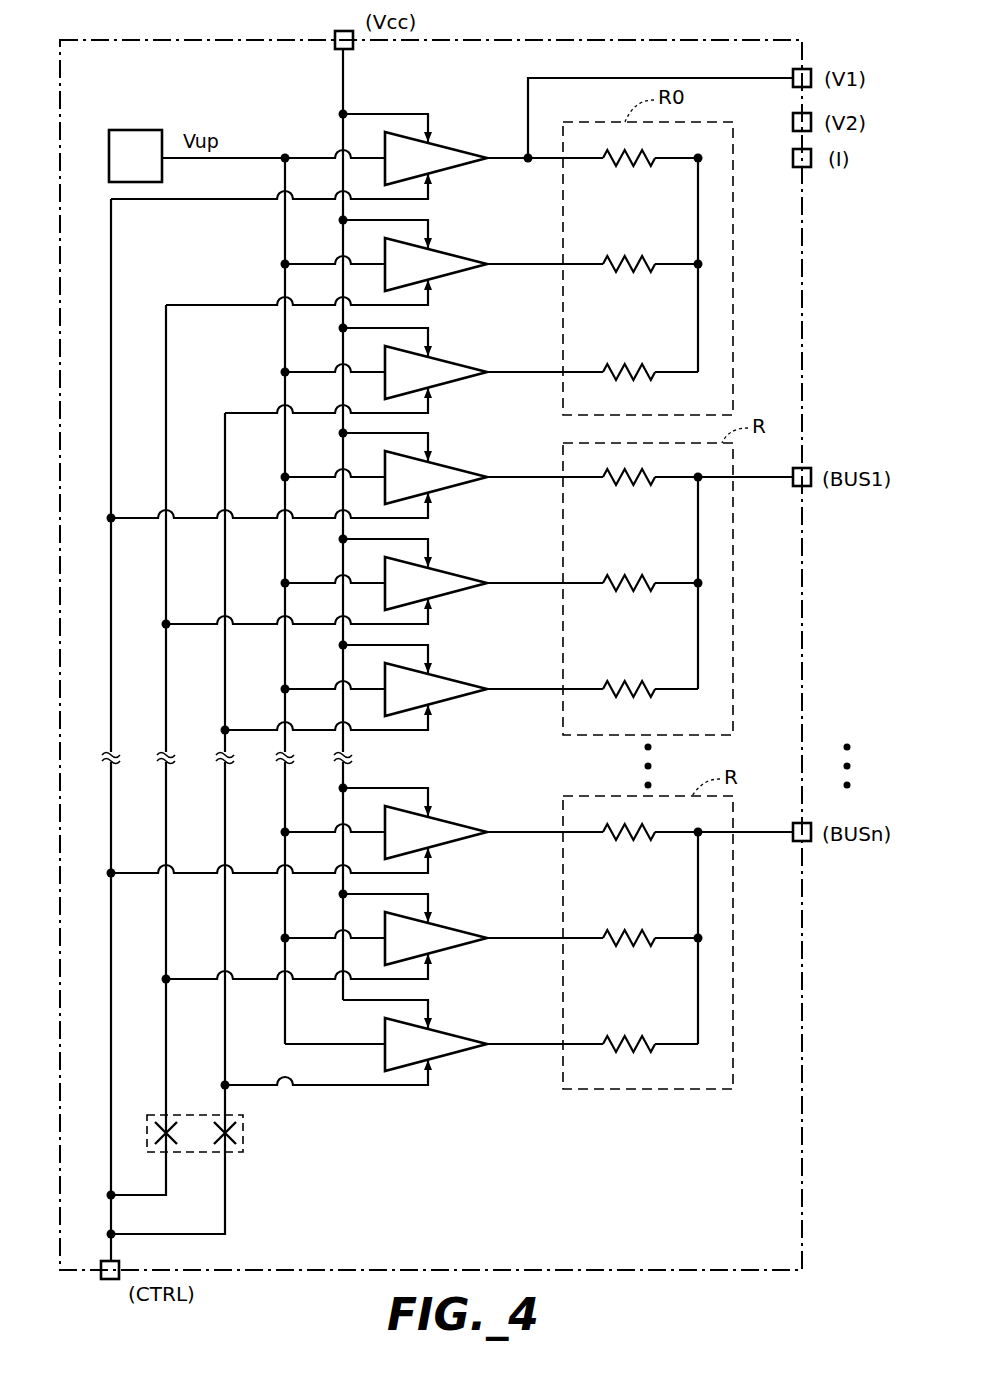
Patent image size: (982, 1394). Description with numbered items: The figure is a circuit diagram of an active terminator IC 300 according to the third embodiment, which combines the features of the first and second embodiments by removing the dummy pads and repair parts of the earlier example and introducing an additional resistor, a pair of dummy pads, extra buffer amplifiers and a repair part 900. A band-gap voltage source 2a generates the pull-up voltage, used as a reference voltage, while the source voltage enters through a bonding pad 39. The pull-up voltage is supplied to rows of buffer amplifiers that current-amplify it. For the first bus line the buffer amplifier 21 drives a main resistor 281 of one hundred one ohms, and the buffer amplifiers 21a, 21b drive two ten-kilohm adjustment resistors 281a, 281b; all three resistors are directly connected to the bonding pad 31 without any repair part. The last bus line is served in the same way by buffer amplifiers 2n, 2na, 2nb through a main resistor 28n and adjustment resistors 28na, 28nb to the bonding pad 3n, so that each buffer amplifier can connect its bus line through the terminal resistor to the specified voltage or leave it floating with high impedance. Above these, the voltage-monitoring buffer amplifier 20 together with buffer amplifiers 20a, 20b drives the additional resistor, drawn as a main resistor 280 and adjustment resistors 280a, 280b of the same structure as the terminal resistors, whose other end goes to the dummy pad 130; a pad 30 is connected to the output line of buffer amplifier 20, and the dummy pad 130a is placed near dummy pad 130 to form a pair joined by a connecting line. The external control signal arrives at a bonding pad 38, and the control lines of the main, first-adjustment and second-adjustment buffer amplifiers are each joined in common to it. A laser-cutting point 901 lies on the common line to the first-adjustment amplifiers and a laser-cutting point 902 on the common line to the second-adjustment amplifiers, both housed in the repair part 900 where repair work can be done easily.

The active terminator IC 300 is at (547, 39).
The band-gap voltage source 2a is at (131, 129).
The bonding pad 39 is at (334, 43).
The bonding pad 30 is at (805, 68).
The dummy pad 130a is at (793, 121).
The dummy pad 130 is at (808, 168).
The bonding pad 31 is at (807, 467).
The bonding pad 3n is at (808, 842).
The bonding pad 38 is at (109, 1280).
The voltage-monitoring buffer amplifier 20 is at (455, 144).
The buffer amplifier 20a is at (455, 250).
The buffer amplifier 20b is at (455, 358).
The buffer amplifier 21 is at (455, 463).
The buffer amplifier 21a is at (455, 569).
The buffer amplifier 21b is at (455, 675).
The buffer amplifier 2n is at (455, 818).
The buffer amplifier 2na is at (455, 924).
The buffer amplifier 2nb is at (455, 1030).
The main resistor 280 is at (651, 166).
The adjustment resistor 280a is at (651, 272).
The adjustment resistor 280b is at (651, 380).
The main resistor 281 is at (651, 485).
The adjustment resistor 281a is at (651, 591).
The adjustment resistor 281b is at (651, 697).
The main resistor 28n is at (651, 840).
The adjustment resistor 28na is at (651, 946).
The adjustment resistor 28nb is at (651, 1052).
The repair part 900 is at (246, 1140).
The laser-cutting point 901 is at (162, 1150).
The laser-cutting point 902 is at (228, 1152).